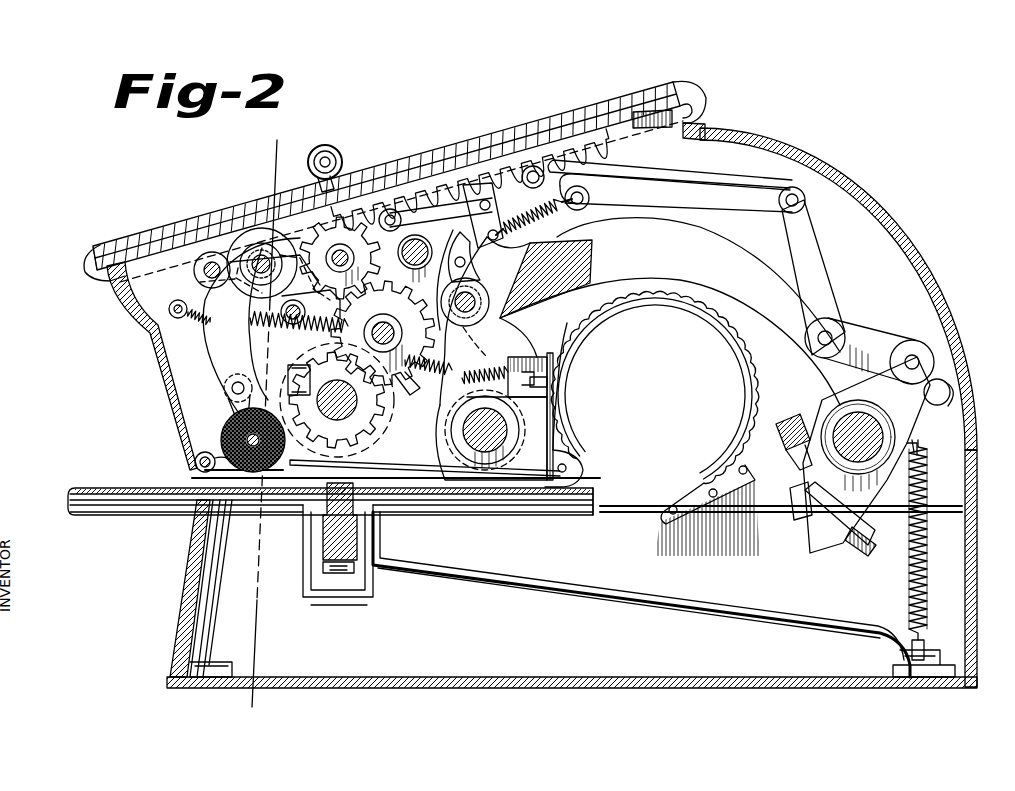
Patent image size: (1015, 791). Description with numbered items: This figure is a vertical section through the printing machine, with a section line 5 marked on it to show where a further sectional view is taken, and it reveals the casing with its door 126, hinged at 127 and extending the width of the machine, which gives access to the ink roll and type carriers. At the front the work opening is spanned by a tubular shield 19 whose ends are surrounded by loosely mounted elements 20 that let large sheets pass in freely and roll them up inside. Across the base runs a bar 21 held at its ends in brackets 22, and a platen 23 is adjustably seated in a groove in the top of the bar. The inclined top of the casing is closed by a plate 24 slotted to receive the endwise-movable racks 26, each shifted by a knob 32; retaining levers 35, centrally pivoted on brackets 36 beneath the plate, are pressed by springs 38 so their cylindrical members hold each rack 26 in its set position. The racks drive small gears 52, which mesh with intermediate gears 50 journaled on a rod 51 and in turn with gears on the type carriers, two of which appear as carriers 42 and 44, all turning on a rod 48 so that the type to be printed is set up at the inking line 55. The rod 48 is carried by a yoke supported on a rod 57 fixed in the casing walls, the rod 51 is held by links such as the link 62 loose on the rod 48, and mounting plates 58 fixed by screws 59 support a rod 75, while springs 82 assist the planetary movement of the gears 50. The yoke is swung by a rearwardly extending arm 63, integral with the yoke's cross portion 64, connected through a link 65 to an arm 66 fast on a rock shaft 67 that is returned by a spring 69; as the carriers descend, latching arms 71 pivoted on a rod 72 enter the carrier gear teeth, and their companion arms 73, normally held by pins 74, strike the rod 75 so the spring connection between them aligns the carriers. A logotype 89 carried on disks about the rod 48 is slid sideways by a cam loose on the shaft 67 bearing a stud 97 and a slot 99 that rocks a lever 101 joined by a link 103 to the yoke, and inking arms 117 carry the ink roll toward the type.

The shaft / section line 5 is at (265, 423).
The shield 19 is at (750, 410).
The loosely mounted elements 20 is at (575, 425).
The bar 21 is at (322, 540).
The brackets 22 is at (375, 605).
The platen 23 is at (388, 510).
The plate 24 is at (620, 130).
The racks 26 is at (575, 150).
The knobs 32 is at (336, 150).
The levers 35 is at (590, 197).
The brackets 36 is at (481, 200).
The springs 38 is at (560, 212).
The type carrier 42 is at (303, 370).
The type carrier 44 is at (352, 461).
The rod 48 is at (380, 425).
The intermediate gear 50 is at (428, 340).
The rod 51 is at (306, 313).
The gears 52 is at (408, 246).
The inking line 55 is at (322, 250).
The rod 57 is at (492, 462).
The mounting plates 58 is at (196, 278).
The screws 59 is at (205, 258).
The link 62 is at (392, 384).
The arm 63 is at (725, 255).
The cross portion 64 is at (578, 290).
The link 65 is at (868, 333).
The arm 66 is at (905, 403).
The rock shaft 67 is at (842, 430).
The return spring 69 is at (910, 578).
The latching arms 71 is at (550, 370).
The rod 72 is at (450, 298).
The arm 73 is at (464, 246).
The pins 74 is at (515, 330).
The rod 75 is at (413, 240).
The springs 82 is at (196, 317).
The logotype 89 is at (262, 410).
The stud 97 is at (808, 462).
The slot 99 is at (950, 388).
The lever 101 is at (808, 228).
The link 103 is at (718, 187).
The arms 117 is at (225, 372).
The door 126 is at (150, 356).
The hinge 127 is at (193, 462).